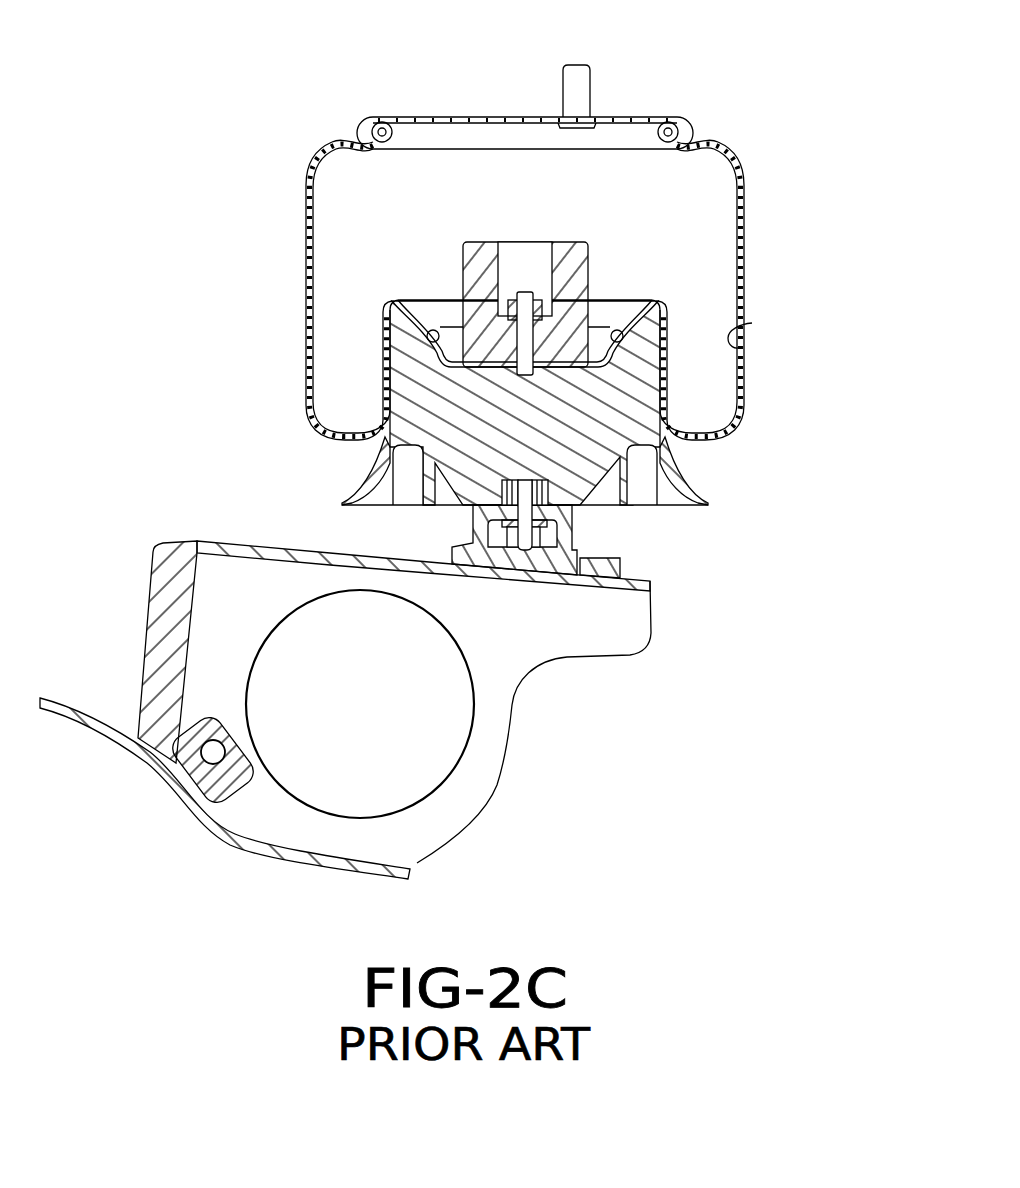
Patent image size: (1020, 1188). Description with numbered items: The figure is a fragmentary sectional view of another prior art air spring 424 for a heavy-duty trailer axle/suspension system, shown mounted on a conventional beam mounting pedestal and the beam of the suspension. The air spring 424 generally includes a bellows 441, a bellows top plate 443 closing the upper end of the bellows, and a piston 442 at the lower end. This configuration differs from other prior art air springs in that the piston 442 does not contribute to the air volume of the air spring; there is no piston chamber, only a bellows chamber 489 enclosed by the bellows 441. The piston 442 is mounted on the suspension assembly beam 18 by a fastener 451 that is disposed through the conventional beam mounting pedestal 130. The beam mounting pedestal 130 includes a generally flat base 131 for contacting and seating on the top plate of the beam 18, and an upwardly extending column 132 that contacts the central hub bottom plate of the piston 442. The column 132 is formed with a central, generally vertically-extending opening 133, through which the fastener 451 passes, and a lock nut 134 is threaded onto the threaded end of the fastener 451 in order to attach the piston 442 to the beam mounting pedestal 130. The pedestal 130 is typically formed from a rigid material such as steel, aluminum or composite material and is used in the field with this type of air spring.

The air spring 424 is at (268, 110).
The bellows 441 is at (744, 237).
The bellows top plate 443 is at (612, 118).
The bellows chamber 489 is at (752, 323).
The piston 442 is at (700, 478).
The suspension assembly beam 18 is at (401, 643).
The beam mounting pedestal 130 is at (538, 584).
The flat base 131 is at (623, 568).
The column 132 is at (572, 548).
The central opening 133 is at (420, 551).
The lock nut 134 is at (507, 531).
The fastener 451 is at (521, 551).